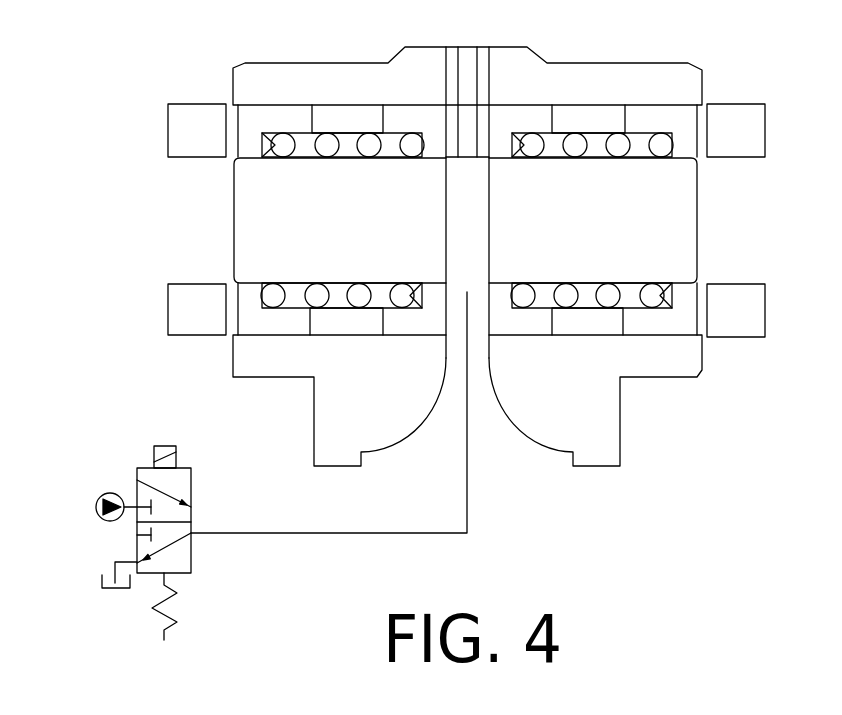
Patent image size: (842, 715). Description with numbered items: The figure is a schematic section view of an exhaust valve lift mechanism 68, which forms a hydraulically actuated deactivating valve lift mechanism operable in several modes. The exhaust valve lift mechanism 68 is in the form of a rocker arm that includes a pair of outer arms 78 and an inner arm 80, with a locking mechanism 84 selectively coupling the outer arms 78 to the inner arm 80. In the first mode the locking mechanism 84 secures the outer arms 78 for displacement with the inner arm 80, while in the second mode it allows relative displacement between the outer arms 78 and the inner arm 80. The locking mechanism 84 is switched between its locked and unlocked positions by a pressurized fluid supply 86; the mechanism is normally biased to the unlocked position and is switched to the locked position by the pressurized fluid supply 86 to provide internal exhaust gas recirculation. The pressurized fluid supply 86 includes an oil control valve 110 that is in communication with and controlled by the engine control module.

The exhaust valve lift mechanism 68 is at (172, 79).
The locking mechanism 84 is at (203, 201).
The outer arms 78 is at (196, 335).
The inner arm 80 is at (283, 377).
The pressurized fluid supply 86 is at (130, 457).
The oil control valve 110 is at (193, 556).